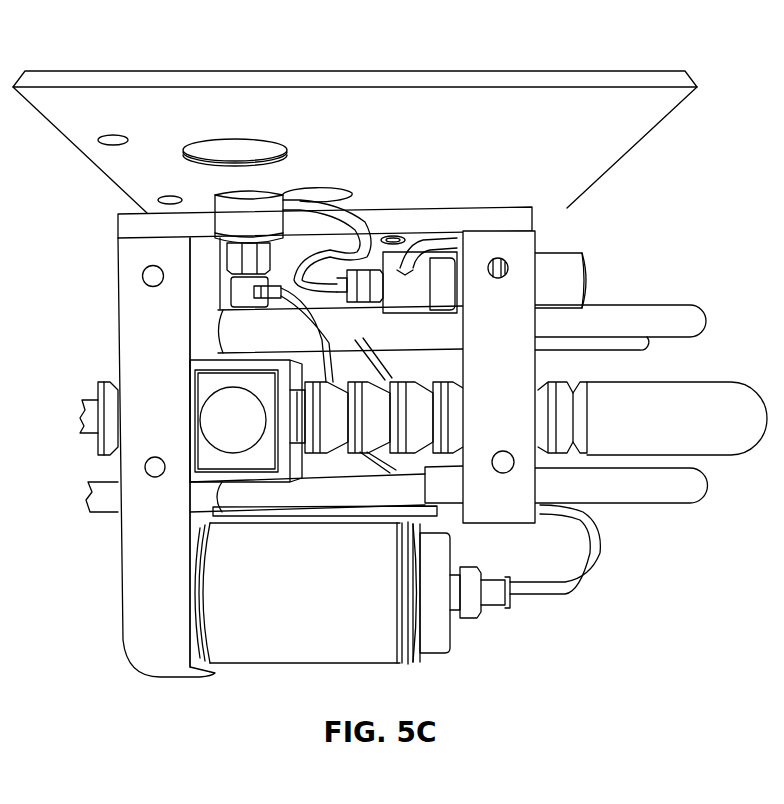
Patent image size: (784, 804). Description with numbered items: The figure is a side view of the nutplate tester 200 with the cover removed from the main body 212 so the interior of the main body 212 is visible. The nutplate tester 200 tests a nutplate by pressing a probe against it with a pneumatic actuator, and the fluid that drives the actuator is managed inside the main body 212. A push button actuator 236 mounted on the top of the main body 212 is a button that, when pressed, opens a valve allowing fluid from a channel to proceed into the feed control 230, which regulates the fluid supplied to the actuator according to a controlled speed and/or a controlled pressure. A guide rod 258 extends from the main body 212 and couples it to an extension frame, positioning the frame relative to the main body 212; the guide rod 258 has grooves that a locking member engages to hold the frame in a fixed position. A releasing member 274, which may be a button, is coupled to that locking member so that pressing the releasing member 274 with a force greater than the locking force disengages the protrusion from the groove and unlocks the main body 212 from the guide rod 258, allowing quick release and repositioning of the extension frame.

The nutplate tester 200 is at (338, 38).
The main body 212 is at (515, 360).
The feed control 230 is at (588, 251).
The push button actuator 236 is at (268, 185).
The guide rod 258 is at (697, 383).
The releasing member 274 is at (200, 395).